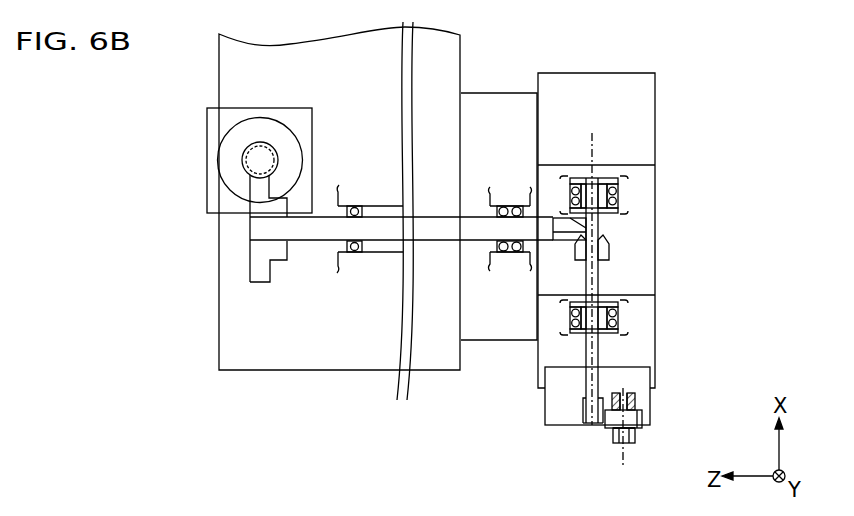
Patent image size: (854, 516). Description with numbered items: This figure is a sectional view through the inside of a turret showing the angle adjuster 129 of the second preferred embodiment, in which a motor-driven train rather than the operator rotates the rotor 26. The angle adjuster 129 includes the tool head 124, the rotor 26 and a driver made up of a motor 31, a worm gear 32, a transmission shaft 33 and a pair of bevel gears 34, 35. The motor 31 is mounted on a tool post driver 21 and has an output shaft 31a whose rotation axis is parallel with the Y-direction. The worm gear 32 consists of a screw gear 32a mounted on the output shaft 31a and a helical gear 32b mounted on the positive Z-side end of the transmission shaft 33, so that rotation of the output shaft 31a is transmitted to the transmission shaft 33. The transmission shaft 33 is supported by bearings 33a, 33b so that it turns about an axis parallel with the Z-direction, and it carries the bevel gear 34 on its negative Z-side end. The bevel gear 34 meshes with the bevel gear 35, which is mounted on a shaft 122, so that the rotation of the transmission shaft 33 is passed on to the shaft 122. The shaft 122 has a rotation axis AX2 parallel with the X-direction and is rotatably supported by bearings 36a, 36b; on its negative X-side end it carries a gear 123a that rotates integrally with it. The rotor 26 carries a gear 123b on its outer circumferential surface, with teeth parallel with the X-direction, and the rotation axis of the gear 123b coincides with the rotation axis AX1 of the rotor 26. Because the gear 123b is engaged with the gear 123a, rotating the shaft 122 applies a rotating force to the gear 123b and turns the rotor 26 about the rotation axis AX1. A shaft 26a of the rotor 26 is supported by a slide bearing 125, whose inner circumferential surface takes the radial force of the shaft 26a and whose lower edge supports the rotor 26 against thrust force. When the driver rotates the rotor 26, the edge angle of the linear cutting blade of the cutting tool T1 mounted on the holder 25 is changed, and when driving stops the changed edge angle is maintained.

The tool post driver 21 is at (452, 46).
The motor 31 is at (211, 118).
The output shaft 31a is at (247, 154).
The worm gear 32 is at (193, 227).
The screw gear 32a is at (246, 172).
The helical gear 32b is at (257, 254).
The transmission shaft 33 is at (308, 233).
The bearing 33a is at (352, 255).
The bearing 33b is at (508, 205).
The bevel gear 34 is at (590, 222).
The bevel gear 35 is at (612, 253).
The bearing 36a is at (618, 186).
The bearing 36b is at (618, 312).
The shaft 122 is at (587, 355).
The gear 123a is at (582, 408).
The gear 123b is at (605, 428).
The tool head 124 is at (548, 404).
The slide bearing 125 is at (633, 402).
The rotor 26 is at (613, 424).
The shaft 26a is at (623, 394).
The holder 25 is at (618, 446).
The cutting tool T1 is at (636, 437).
The angle adjuster 129 is at (712, 354).
The rotation axis AX1 is at (625, 455).
The rotation axis AX2 is at (592, 140).